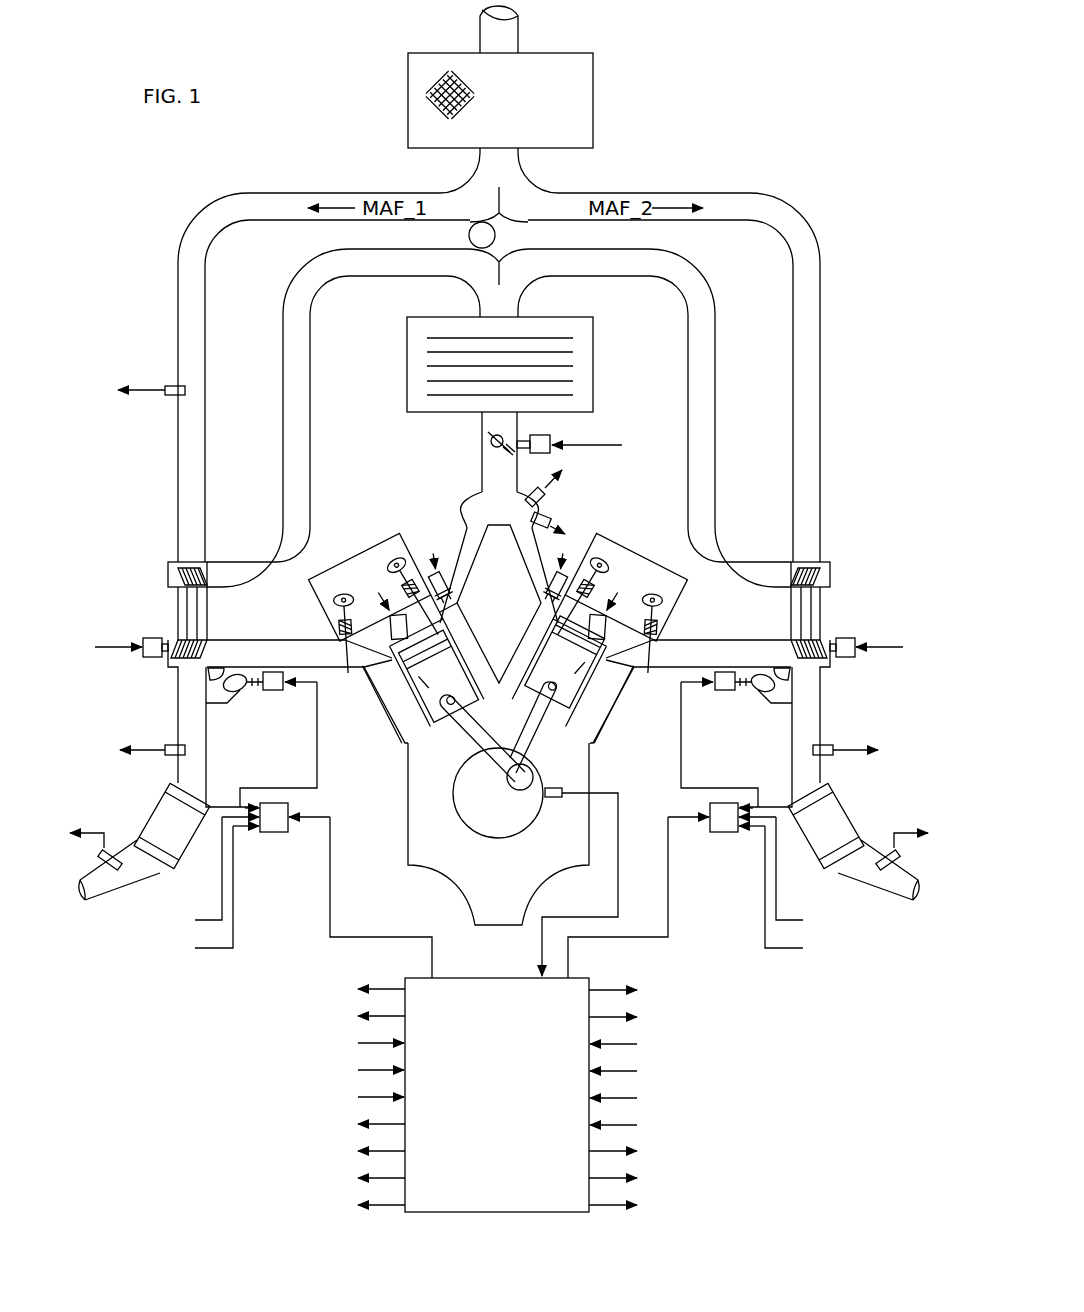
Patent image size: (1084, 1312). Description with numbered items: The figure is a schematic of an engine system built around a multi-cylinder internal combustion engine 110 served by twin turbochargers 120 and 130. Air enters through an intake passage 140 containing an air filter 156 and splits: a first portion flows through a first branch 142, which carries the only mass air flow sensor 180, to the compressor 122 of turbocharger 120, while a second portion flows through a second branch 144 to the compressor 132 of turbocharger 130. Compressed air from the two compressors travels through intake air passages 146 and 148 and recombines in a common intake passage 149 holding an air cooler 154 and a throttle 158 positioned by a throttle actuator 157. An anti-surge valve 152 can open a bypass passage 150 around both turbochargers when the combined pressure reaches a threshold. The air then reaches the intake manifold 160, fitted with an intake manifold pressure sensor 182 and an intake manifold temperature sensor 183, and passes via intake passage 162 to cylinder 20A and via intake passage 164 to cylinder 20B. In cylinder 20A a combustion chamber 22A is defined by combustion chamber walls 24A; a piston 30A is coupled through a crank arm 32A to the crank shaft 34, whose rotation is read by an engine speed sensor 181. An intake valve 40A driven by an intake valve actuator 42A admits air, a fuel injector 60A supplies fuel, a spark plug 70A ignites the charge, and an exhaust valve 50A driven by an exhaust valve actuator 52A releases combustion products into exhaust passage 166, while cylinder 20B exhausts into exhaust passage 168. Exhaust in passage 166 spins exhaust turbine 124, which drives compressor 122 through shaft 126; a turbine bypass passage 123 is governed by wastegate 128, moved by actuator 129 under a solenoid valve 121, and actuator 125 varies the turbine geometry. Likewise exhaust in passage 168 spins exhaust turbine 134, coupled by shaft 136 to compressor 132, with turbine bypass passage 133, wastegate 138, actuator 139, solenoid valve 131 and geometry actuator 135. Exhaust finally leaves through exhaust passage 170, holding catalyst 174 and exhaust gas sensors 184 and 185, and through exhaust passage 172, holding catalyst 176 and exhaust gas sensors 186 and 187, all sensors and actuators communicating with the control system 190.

The cylinder 20A is at (405, 747).
The cylinder 20B is at (584, 710).
The combustion chamber 22A is at (408, 690).
The combustion chamber walls 24A is at (410, 718).
The piston 30A is at (433, 742).
The crank arm 32A is at (470, 745).
The crank shaft 34 is at (497, 812).
The intake valve 40A is at (434, 558).
The intake valve actuator 42A is at (386, 540).
The exhaust valve 50A is at (380, 682).
The exhaust valve actuator 52A is at (360, 572).
The fuel injector 60A is at (469, 623).
The spark plug 70A is at (388, 580).
The internal combustion engine 110 is at (427, 888).
The turbocharger 120 is at (106, 610).
The solenoid valve 121 is at (275, 833).
The compressor 122 is at (170, 576).
The turbine bypass passage 123 is at (232, 690).
The exhaust turbine 124 is at (180, 652).
The actuator 125 is at (142, 638).
The shaft 126 is at (197, 614).
The wastegate 128 is at (256, 690).
The actuator 129 is at (275, 691).
The turbocharger 130 is at (892, 610).
The solenoid valve 131 is at (722, 833).
The compressor 132 is at (828, 576).
The turbine bypass passage 133 is at (777, 692).
The exhaust turbine 134 is at (818, 652).
The actuator 135 is at (855, 638).
The shaft 136 is at (801, 614).
The wastegate 138 is at (747, 690).
The actuator 139 is at (723, 691).
The intake passage 140 is at (512, 32).
The first branch of the intake passage 142 is at (266, 200).
The second branch of the intake passage 144 is at (729, 200).
The intake air passage 146 is at (312, 370).
The intake air passage 148 is at (718, 370).
The common intake passage 149 is at (482, 468).
The bypass passage 150 is at (506, 240).
The anti-surge valve 152 is at (469, 235).
The air cooler 154 is at (583, 380).
The air filter 156 is at (575, 102).
The throttle actuator 157 is at (553, 440).
The throttle 158 is at (488, 438).
The intake manifold 160 is at (478, 500).
The intake passage 162 is at (484, 585).
The intake passage 164 is at (466, 562).
The exhaust passage 166 is at (304, 648).
The exhaust passage 168 is at (694, 648).
The exhaust passage 170 is at (207, 772).
The exhaust passage 172 is at (791, 772).
The catalyst 174 is at (163, 826).
The catalyst 176 is at (835, 826).
The mass air flow sensor 180 is at (174, 385).
The engine speed sensor 181 is at (557, 798).
The intake manifold pressure sensor 182 is at (550, 498).
The intake manifold temperature sensor 183 is at (555, 517).
The exhaust gas sensor 184 is at (174, 745).
The exhaust gas sensor 185 is at (104, 858).
The exhaust gas sensor 186 is at (824, 745).
The exhaust gas sensor 187 is at (894, 858).
The control system 190 is at (497, 1097).